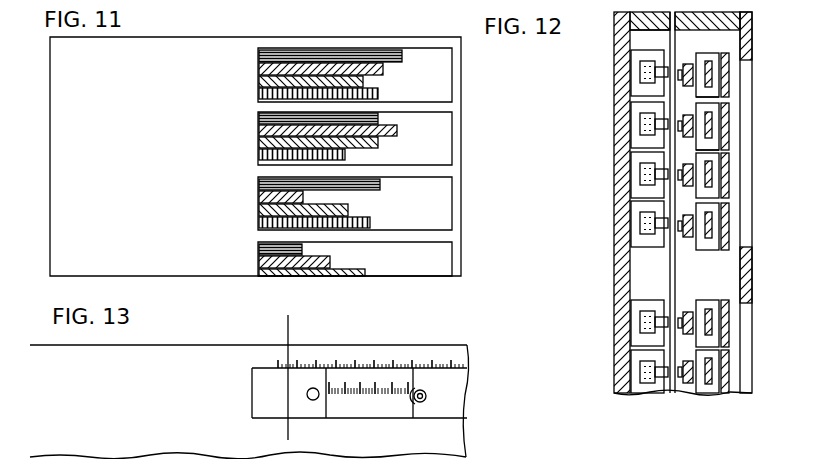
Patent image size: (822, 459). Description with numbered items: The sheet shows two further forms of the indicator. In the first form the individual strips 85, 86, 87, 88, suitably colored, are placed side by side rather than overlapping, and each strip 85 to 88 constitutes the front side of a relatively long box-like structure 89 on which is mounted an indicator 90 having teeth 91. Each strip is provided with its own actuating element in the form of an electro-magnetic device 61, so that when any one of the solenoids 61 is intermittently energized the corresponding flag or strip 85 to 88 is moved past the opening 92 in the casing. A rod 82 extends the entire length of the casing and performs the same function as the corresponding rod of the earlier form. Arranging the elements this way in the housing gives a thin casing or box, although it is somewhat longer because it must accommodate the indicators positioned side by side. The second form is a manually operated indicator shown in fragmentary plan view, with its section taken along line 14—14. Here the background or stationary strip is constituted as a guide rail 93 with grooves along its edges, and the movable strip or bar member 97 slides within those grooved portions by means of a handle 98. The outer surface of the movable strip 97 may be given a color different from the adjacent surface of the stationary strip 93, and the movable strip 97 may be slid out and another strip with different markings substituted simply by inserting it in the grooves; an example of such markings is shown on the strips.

In FIG. 13, the section line 14- 14 is at (300, 320).
In FIG. 12, the electro-magnetic actuating device 61 is at (637, 88).
In FIG. 12, the rod 82 is at (670, 37).
In FIG. 11, the strip 85 is at (260, 56).
In FIG. 12, the strip 85 is at (729, 73).
In FIG. 11, the strip 86 is at (260, 68).
In FIG. 12, the strip 86 is at (729, 127).
In FIG. 11, the strip 87 is at (260, 82).
In FIG. 12, the strip 87 is at (729, 172).
In FIG. 11, the strip 88 is at (260, 93).
In FIG. 12, the strip 88 is at (729, 217).
In FIG. 12, the box-like structure 89 is at (710, 60).
In FIG. 12, the indicator 90 is at (687, 63).
In FIG. 12, the teeth 91 is at (683, 86).
In FIG. 12, the opening 92 is at (745, 241).
In FIG. 13, the guide rail 93 is at (455, 408).
In FIG. 13, the movable strip 97 is at (280, 408).
In FIG. 13, the handle 98 is at (314, 400).